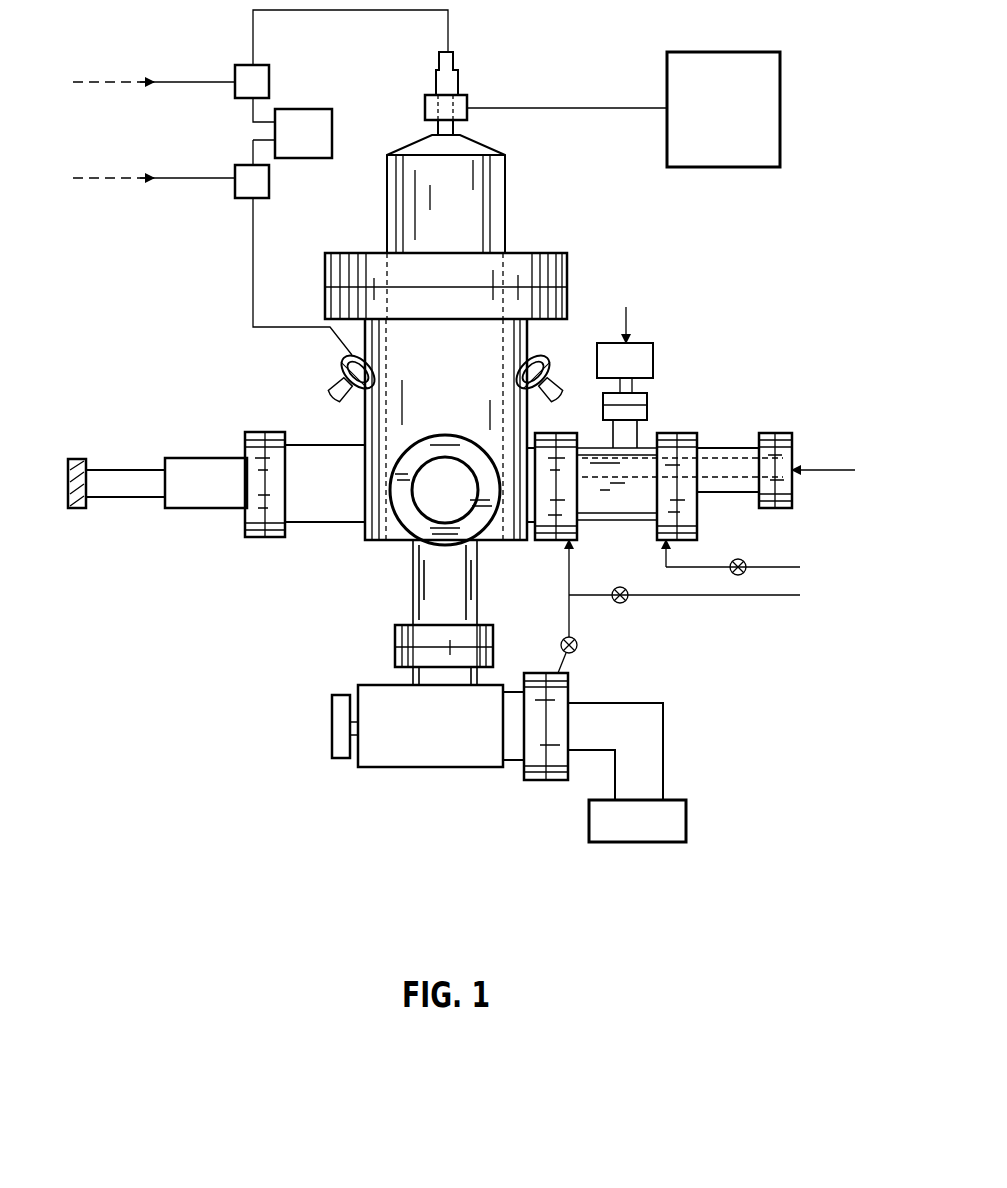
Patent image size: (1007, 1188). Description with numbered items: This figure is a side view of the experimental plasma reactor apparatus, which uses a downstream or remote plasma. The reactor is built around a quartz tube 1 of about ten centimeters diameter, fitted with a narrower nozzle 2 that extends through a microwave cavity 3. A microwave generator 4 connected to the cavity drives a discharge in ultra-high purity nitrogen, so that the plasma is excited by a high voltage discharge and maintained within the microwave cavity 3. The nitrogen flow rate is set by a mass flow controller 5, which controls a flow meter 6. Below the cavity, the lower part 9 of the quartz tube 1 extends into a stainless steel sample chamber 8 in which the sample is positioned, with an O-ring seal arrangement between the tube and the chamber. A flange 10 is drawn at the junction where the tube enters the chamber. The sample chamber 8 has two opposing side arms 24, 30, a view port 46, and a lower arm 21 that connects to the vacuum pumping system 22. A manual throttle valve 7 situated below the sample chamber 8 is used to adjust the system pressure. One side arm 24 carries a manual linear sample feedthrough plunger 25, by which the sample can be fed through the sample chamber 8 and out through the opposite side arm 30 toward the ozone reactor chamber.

The quartz tube 1 is at (476, 198).
The nozzle 2 is at (447, 70).
The microwave cavity 3 is at (430, 108).
The microwave generator 4 is at (680, 92).
The mass flow controller 5 is at (289, 146).
The flow meter 6 is at (255, 82).
The manual throttle valve 7 is at (352, 762).
The sample chamber 8 is at (363, 437).
The lower part of the quartz tube 9 is at (527, 340).
The flange 10 is at (567, 272).
The lower arm 21 is at (425, 583).
The vacuum pumping system 22 is at (668, 825).
The side arm 24 is at (314, 507).
The manual linear sample feedthrough plunger 25 is at (143, 487).
The side arm 30 is at (628, 505).
The view port 46 is at (432, 505).